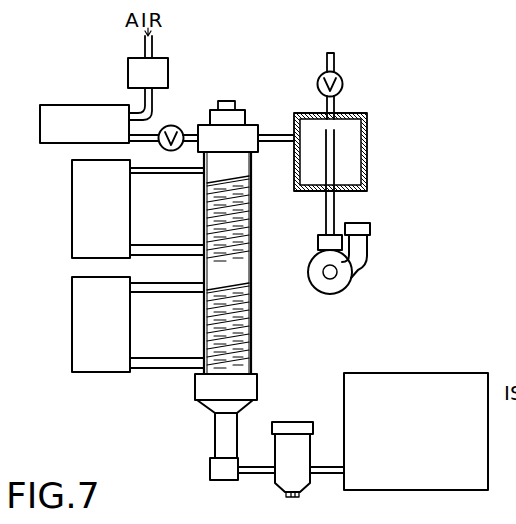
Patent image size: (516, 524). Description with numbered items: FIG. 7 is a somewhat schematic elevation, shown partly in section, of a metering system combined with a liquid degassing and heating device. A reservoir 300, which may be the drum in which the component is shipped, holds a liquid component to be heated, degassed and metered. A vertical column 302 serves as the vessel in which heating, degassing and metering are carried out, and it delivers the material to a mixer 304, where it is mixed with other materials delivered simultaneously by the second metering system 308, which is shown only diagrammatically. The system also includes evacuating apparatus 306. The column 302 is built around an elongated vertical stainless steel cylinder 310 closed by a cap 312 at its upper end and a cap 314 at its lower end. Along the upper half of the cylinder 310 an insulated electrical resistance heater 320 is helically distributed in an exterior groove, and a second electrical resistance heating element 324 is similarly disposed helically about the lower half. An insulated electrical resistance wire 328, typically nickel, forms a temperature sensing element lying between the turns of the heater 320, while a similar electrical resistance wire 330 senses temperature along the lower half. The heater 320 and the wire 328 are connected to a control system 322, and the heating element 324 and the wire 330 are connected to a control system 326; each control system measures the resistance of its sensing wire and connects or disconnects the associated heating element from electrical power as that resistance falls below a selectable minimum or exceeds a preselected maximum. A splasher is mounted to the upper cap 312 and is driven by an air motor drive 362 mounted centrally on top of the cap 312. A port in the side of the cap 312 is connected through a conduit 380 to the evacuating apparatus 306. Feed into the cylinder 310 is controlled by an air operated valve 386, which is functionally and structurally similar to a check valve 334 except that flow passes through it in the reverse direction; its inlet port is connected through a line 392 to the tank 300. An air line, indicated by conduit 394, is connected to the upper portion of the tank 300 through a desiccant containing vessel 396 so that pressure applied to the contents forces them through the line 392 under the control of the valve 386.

The reservoir 300 is at (78, 104).
The vertical column 302 is at (276, 264).
The mixer 304 is at (320, 405).
The evacuating apparatus 306 is at (371, 212).
The second metering system 308 is at (397, 373).
The cylinder 310 is at (203, 372).
The cap 312 is at (228, 134).
The cap 314 is at (196, 395).
The electrical resistance heater 320 is at (247, 180).
The control system 322 is at (74, 187).
The second electrical resistance heating element 324 is at (237, 292).
The control system 326 is at (75, 311).
The electrical resistance wire 328 is at (206, 187).
The electrical resistance wire 330 is at (240, 304).
The check valve 334 is at (210, 469).
The air motor drive 362 is at (236, 121).
The conduit 380 is at (275, 137).
The air operated valve 386 is at (160, 151).
The line 392 is at (152, 132).
The conduit 394 is at (153, 48).
The desiccant containing vessel 396 is at (169, 70).